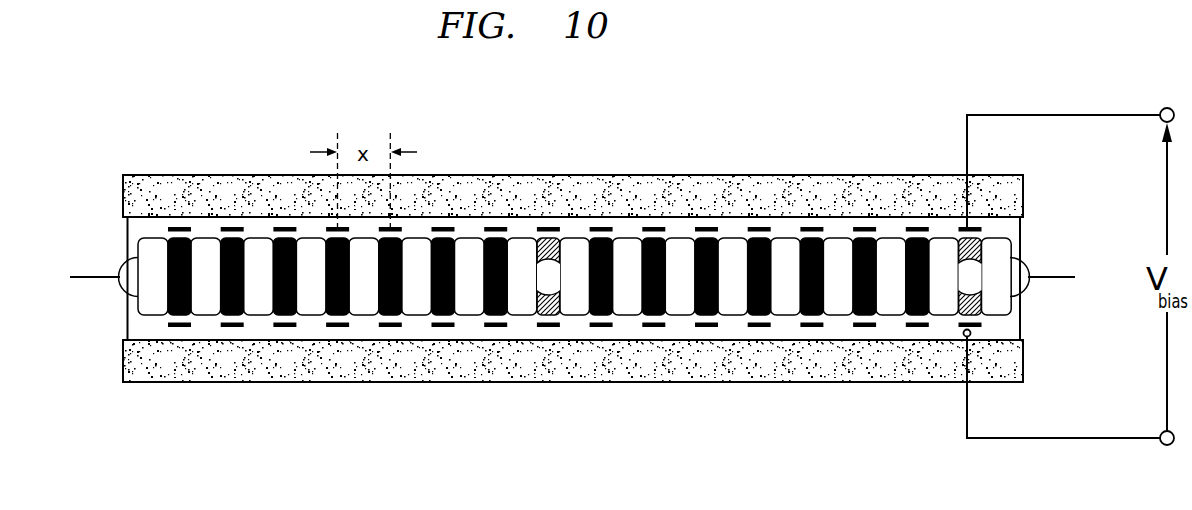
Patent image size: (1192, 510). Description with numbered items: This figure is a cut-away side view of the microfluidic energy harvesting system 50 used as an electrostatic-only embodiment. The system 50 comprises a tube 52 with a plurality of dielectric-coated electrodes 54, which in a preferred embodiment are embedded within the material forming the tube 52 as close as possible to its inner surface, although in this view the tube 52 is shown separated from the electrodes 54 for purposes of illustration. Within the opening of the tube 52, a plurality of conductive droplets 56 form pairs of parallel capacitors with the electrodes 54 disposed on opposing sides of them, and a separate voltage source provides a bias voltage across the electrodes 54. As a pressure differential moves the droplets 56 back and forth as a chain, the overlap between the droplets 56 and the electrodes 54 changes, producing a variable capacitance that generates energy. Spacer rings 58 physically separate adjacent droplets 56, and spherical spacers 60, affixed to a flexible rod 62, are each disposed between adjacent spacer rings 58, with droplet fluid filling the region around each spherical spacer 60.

The microfluidic energy harvesting system 50 is at (183, 117).
The tube 52 is at (1013, 195).
The dielectric-coated electrodes 54 is at (700, 223).
The conductive droplets 56 is at (907, 240).
The spacer rings 58 is at (415, 287).
The spherical spacers 60 is at (120, 287).
The flexible rod 62 is at (80, 277).